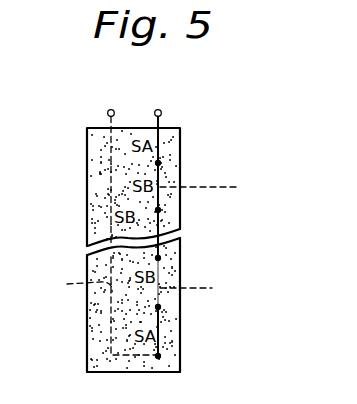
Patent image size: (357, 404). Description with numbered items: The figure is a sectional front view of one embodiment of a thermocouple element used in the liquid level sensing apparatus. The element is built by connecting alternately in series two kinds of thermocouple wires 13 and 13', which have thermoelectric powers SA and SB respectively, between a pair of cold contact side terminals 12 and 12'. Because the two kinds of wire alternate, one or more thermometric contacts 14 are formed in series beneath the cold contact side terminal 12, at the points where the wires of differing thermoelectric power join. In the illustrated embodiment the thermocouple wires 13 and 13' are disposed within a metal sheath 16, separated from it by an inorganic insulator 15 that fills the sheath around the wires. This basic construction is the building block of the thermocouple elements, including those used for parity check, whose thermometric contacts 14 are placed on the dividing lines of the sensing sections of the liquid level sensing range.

The cold contact side terminal 12 is at (172, 212).
The cold contact side terminal 12' is at (127, 211).
The thermocouple wire 13 is at (195, 242).
The thermocouple wire 13' is at (151, 237).
The thermometric contact 14 is at (160, 163).
The inorganic insulator 15 is at (87, 343).
The metal sheath 16 is at (87, 192).